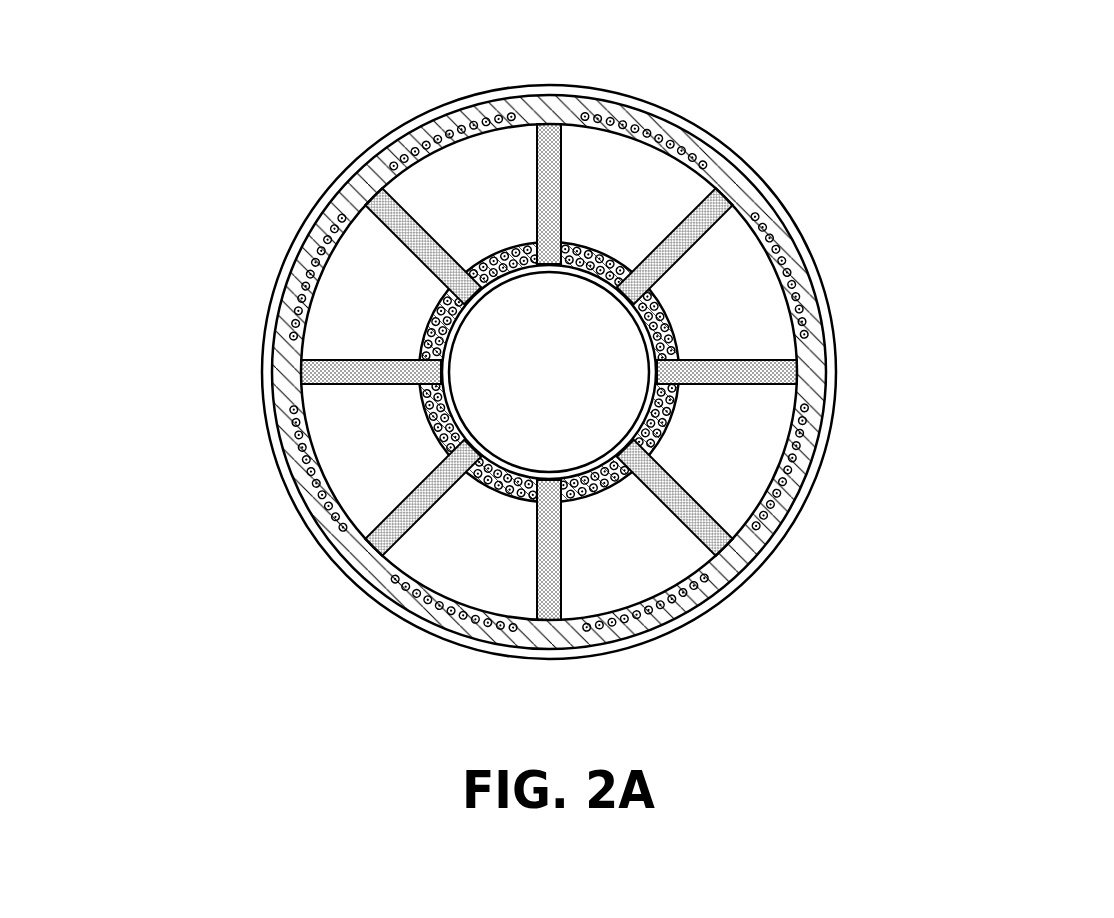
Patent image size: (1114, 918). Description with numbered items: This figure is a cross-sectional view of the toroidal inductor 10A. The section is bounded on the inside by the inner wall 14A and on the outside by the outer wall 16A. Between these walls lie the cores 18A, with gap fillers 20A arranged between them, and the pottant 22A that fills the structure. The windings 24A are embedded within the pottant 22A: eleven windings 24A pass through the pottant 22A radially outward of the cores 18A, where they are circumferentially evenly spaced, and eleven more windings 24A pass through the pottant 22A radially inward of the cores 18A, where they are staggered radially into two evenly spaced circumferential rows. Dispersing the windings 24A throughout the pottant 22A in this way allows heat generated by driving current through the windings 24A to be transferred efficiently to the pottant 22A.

The toroidal inductor 10A is at (602, 379).
The inner wall 14A is at (587, 277).
The outer wall 16A is at (767, 549).
The cores 18A is at (450, 582).
The gap fillers 20A is at (310, 373).
The pottant 22A is at (433, 425).
The windings 24A is at (300, 278).